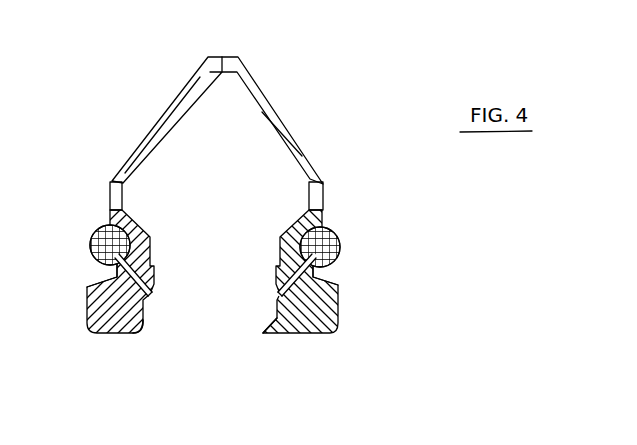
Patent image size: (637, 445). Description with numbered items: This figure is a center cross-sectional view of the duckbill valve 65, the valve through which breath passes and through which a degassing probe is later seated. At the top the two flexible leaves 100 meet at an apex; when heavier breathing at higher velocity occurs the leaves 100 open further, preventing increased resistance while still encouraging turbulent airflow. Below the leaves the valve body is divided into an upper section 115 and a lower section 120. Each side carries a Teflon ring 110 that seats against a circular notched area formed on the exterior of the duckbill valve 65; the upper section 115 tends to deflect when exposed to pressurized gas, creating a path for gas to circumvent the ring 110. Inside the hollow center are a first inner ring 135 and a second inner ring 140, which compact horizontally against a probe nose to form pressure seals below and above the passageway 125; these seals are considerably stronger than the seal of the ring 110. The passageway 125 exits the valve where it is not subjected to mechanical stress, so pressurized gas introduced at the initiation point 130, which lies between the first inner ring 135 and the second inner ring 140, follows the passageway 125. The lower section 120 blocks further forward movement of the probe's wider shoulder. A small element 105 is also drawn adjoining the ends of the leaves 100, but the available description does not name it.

The duckbill valve 65 is at (295, 77).
The leaves 100 is at (150, 131).
The arm end block 105 is at (109, 183).
The ring 110 is at (90, 246).
The upper section 115 is at (110, 205).
The lower section 120 is at (88, 318).
The passageway 125 is at (87, 290).
The initiation point 130 is at (149, 297).
The first inner ring 135 is at (152, 329).
The second inner ring 140 is at (153, 275).